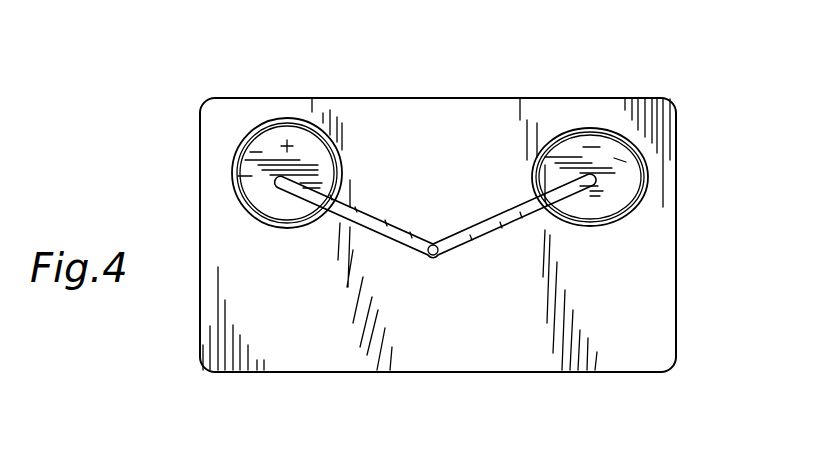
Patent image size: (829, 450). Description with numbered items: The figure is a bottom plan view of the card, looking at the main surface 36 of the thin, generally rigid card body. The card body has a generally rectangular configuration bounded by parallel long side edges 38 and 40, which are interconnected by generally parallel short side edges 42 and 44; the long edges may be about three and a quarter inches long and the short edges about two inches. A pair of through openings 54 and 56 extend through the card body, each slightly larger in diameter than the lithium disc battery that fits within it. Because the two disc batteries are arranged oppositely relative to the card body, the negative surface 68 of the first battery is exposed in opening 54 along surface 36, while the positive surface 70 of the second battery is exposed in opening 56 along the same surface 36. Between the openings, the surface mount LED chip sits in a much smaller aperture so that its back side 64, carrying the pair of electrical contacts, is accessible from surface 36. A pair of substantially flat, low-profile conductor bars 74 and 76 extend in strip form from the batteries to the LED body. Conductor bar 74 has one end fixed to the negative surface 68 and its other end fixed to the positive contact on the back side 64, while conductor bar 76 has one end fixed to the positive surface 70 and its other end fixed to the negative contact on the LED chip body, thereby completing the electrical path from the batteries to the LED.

The main surface 36 is at (475, 315).
The long side edge 38 is at (458, 97).
The long side edge 40 is at (513, 372).
The short side edge 42 is at (677, 226).
The short side edge 44 is at (200, 205).
The opening 54 is at (587, 128).
The opening 56 is at (250, 130).
The back side 64 is at (438, 240).
The negative surface 68 is at (620, 160).
The positive surface 70 is at (245, 178).
The conductor bar 74 is at (505, 218).
The conductor bar 76 is at (367, 207).